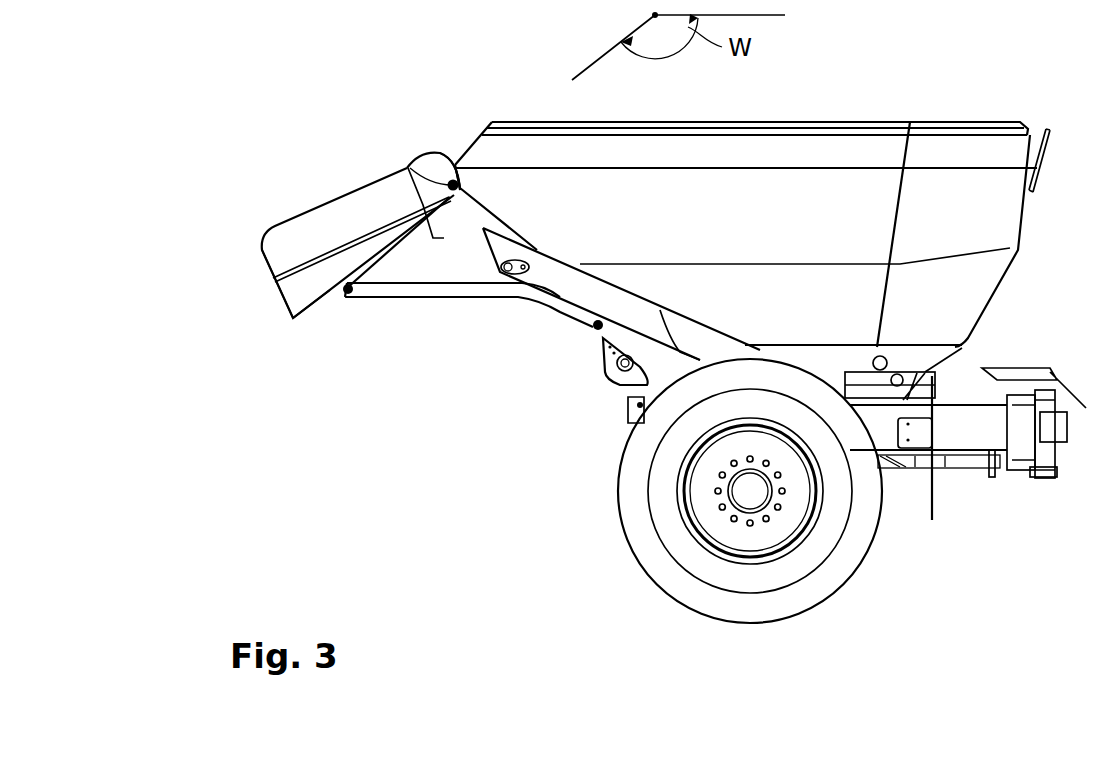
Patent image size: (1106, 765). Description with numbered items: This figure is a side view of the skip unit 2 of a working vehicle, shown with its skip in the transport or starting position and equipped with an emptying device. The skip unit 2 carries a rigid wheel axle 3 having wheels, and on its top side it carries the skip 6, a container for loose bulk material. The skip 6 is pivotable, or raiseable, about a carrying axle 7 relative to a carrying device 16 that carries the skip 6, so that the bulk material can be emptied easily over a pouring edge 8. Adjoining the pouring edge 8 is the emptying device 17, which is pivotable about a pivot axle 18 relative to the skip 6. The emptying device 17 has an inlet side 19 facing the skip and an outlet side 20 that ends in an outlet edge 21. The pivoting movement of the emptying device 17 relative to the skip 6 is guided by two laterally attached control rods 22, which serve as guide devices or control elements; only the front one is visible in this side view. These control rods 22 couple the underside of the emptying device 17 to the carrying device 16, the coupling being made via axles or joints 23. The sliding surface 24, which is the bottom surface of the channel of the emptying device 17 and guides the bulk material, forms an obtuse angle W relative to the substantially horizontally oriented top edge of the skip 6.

The skip unit 2 is at (1012, 511).
The rigid wheel axle 3 is at (750, 490).
The skip 6 is at (800, 228).
The carrying axle 7 is at (510, 276).
The pouring edge 8 is at (453, 163).
The carrying device 16 is at (643, 368).
The emptying device 17 is at (291, 180).
The pivot axle 18 is at (413, 166).
The inlet side 19 is at (437, 152).
The outlet side 20 is at (290, 303).
The outlet edge 21 is at (293, 320).
The control rods 22 is at (470, 298).
The joints 23 is at (348, 300).
The sliding surface 24 is at (311, 318).